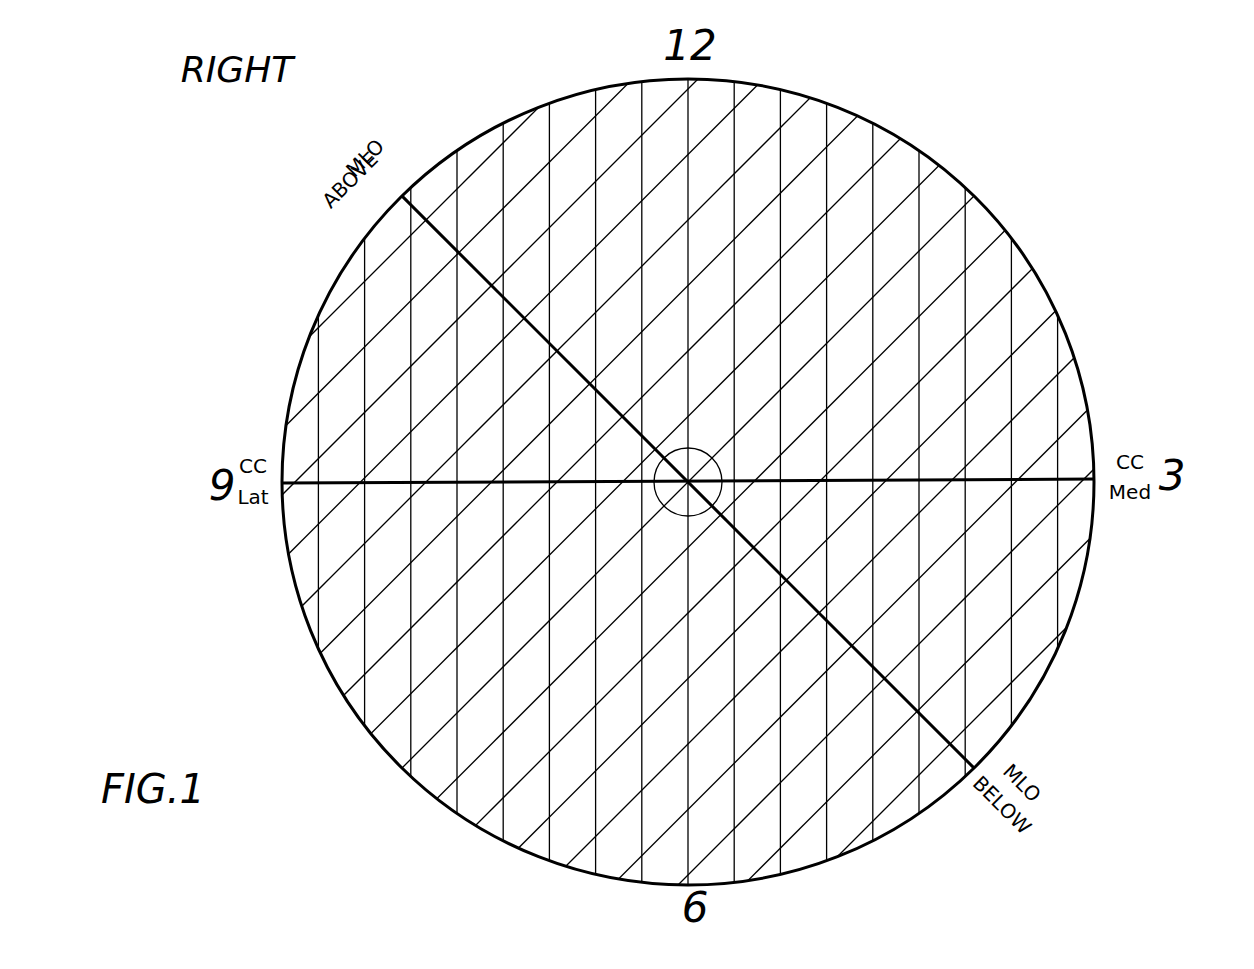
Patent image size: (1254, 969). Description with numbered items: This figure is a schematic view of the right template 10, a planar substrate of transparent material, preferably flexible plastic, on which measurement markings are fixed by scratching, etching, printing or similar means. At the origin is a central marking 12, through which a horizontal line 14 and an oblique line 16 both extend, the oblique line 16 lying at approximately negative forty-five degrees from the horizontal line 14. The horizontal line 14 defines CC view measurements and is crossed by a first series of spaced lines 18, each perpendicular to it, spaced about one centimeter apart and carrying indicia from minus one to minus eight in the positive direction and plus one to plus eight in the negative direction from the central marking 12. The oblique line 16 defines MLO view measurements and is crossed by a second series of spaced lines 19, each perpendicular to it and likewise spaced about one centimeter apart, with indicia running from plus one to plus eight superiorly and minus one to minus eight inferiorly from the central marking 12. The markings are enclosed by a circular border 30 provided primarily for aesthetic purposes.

The right template 10 is at (627, 467).
The central marking 12 is at (675, 513).
The horizontal line 14 is at (988, 481).
The oblique line 16 is at (938, 730).
The first series of spaced lines 18 is at (687, 482).
The second series of spaced lines 19 is at (687, 118).
The circular border 30 is at (928, 152).